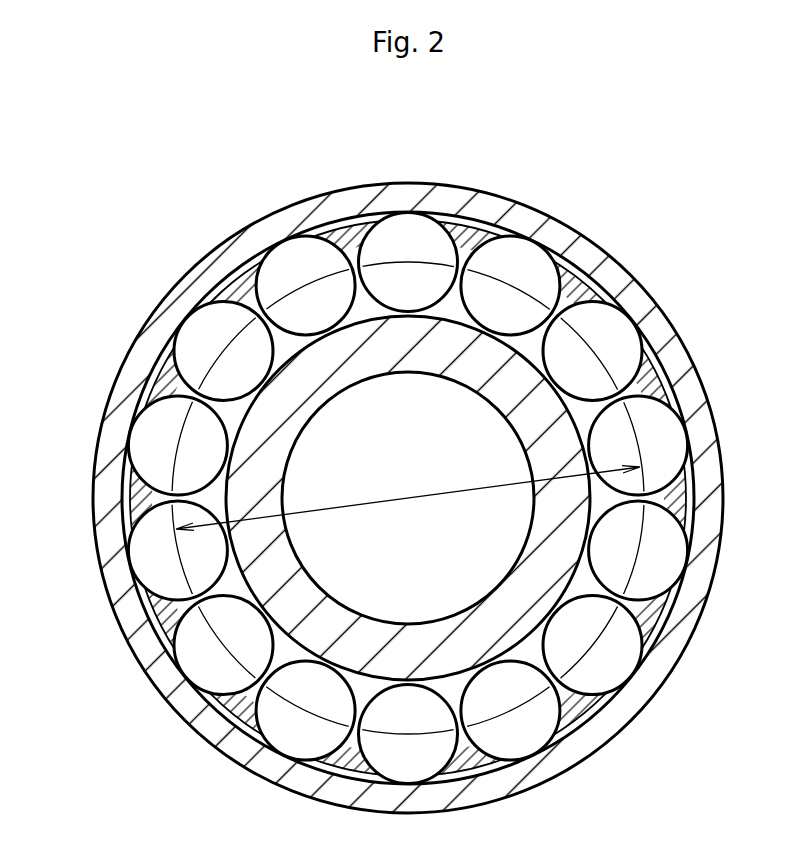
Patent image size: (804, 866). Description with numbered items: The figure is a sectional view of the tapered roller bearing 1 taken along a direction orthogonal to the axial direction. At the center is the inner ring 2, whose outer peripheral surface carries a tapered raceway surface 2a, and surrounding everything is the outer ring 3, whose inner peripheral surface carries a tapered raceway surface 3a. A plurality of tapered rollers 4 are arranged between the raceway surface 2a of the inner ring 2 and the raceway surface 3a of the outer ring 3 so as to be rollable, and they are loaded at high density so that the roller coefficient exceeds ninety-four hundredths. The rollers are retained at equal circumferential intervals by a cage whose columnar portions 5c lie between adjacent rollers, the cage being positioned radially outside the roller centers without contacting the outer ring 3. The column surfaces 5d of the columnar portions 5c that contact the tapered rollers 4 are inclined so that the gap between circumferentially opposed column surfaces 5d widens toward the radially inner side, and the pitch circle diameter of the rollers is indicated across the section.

The tapered roller bearing 1 is at (410, 475).
The inner ring 2 is at (525, 398).
The raceway surface 2a is at (238, 418).
The outer ring 3 is at (578, 248).
The raceway surface 3a is at (668, 403).
The tapered rollers 4 is at (422, 232).
The columnar portions 5c is at (243, 287).
The column surfaces 5d is at (322, 242).